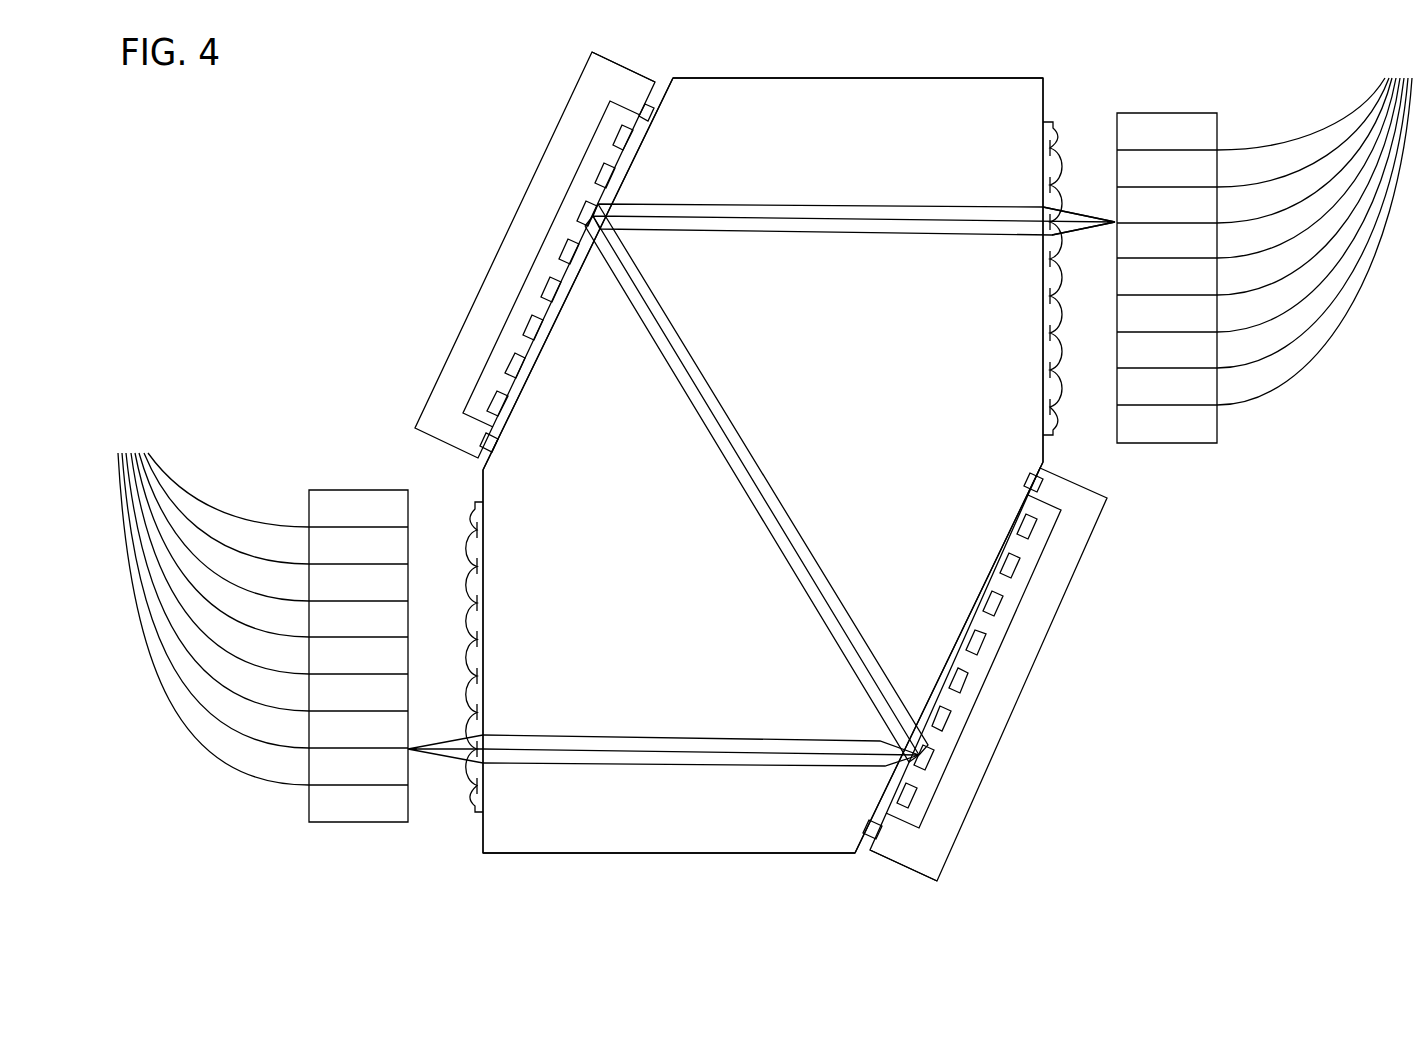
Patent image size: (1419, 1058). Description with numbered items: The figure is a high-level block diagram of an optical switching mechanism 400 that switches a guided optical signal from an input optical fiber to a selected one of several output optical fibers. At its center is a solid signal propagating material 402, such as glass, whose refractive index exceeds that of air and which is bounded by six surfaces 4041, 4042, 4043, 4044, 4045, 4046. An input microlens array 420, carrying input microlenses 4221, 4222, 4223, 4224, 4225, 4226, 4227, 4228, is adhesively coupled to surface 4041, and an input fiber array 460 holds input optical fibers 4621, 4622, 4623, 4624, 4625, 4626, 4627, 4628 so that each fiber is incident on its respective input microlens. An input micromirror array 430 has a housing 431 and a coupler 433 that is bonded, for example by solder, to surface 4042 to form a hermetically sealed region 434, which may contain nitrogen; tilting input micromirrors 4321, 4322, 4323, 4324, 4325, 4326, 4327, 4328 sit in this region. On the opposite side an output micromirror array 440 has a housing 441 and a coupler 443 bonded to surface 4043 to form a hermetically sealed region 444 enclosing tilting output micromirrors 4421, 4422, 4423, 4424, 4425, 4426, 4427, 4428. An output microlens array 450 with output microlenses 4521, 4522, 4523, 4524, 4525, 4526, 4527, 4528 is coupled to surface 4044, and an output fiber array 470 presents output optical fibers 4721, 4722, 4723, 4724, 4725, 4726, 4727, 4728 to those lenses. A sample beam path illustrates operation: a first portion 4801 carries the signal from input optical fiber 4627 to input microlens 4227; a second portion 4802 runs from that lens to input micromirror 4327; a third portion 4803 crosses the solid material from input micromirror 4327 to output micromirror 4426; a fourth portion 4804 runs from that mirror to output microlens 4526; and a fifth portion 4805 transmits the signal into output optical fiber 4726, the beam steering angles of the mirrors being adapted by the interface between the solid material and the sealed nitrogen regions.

The optical switching mechanism 400 is at (193, 116).
The solid signal propagating material 402 is at (770, 822).
The surface 4041 is at (482, 851).
The surface 4042 is at (864, 834).
The surface 4043 is at (490, 471).
The surface 4044 is at (1040, 463).
The surface 4045 is at (603, 853).
The surface 4046 is at (851, 78).
The input microlens array 420 is at (472, 812).
The input microlens 4221 is at (477, 530).
The input microlens 4222 is at (477, 566).
The input microlens 4223 is at (477, 603).
The input microlens 4224 is at (477, 640).
The input microlens 4225 is at (477, 676).
The input microlens 4226 is at (477, 712).
The input microlens 4227 is at (484, 735).
The input microlens 4228 is at (477, 786).
The input micromirror array 430 is at (1112, 499).
The housing 431 is at (932, 853).
The input micromirror 4321 is at (1032, 527).
The input micromirror 4322 is at (1015, 565).
The input micromirror 4323 is at (998, 604).
The input micromirror 4324 is at (981, 642).
The input micromirror 4325 is at (964, 680).
The input micromirror 4326 is at (946, 719).
The input micromirror 4327 is at (929, 757).
The input micromirror 4328 is at (912, 796).
The coupler 433 is at (1046, 474).
The hermetically sealed region 434 is at (905, 835).
The output micromirror array 440 is at (430, 395).
The housing 441 is at (430, 428).
The output micromirror 4421 is at (497, 403).
The output micromirror 4422 is at (515, 365).
The output micromirror 4423 is at (533, 327).
The output micromirror 4424 is at (551, 289).
The output micromirror 4425 is at (569, 251).
The output micromirror 4426 is at (587, 213).
The output micromirror 4427 is at (605, 175).
The output micromirror 4428 is at (623, 137).
The coupler 443 is at (660, 84).
The hermetically sealed region 444 is at (640, 116).
The output microlens array 450 is at (1053, 122).
The output microlens 4521 is at (1050, 407).
The output microlens 4522 is at (1050, 370).
The output microlens 4523 is at (1050, 333).
The output microlens 4524 is at (1050, 296).
The output microlens 4525 is at (1050, 259).
The output microlens 4526 is at (1050, 220).
The output microlens 4527 is at (1050, 185).
The output microlens 4528 is at (1050, 148).
The input fiber array 460 is at (358, 822).
The input optical fiber 4621 is at (228, 490).
The input optical fiber 4622 is at (226, 508).
The input optical fiber 4623 is at (224, 527).
The input optical fiber 4624 is at (222, 545).
The input optical fiber 4625 is at (220, 563).
The input optical fiber 4626 is at (217, 582).
The input optical fiber 4627 is at (215, 600).
The input optical fiber 4628 is at (213, 619).
The output fiber array 470 is at (1160, 113).
The output optical fiber 4721 is at (1314, 241).
The output optical fiber 4722 is at (1312, 223).
The output optical fiber 4723 is at (1310, 205).
The output optical fiber 4724 is at (1308, 186).
The output optical fiber 4725 is at (1306, 168).
The output optical fiber 4726 is at (1304, 150).
The output optical fiber 4727 is at (1303, 132).
The output optical fiber 4728 is at (1301, 114).
The first portion 4801 is at (446, 760).
The second portion 4802 is at (656, 767).
The third portion 4803 is at (791, 540).
The fourth portion 4804 is at (800, 204).
The fifth portion 4805 is at (1078, 236).